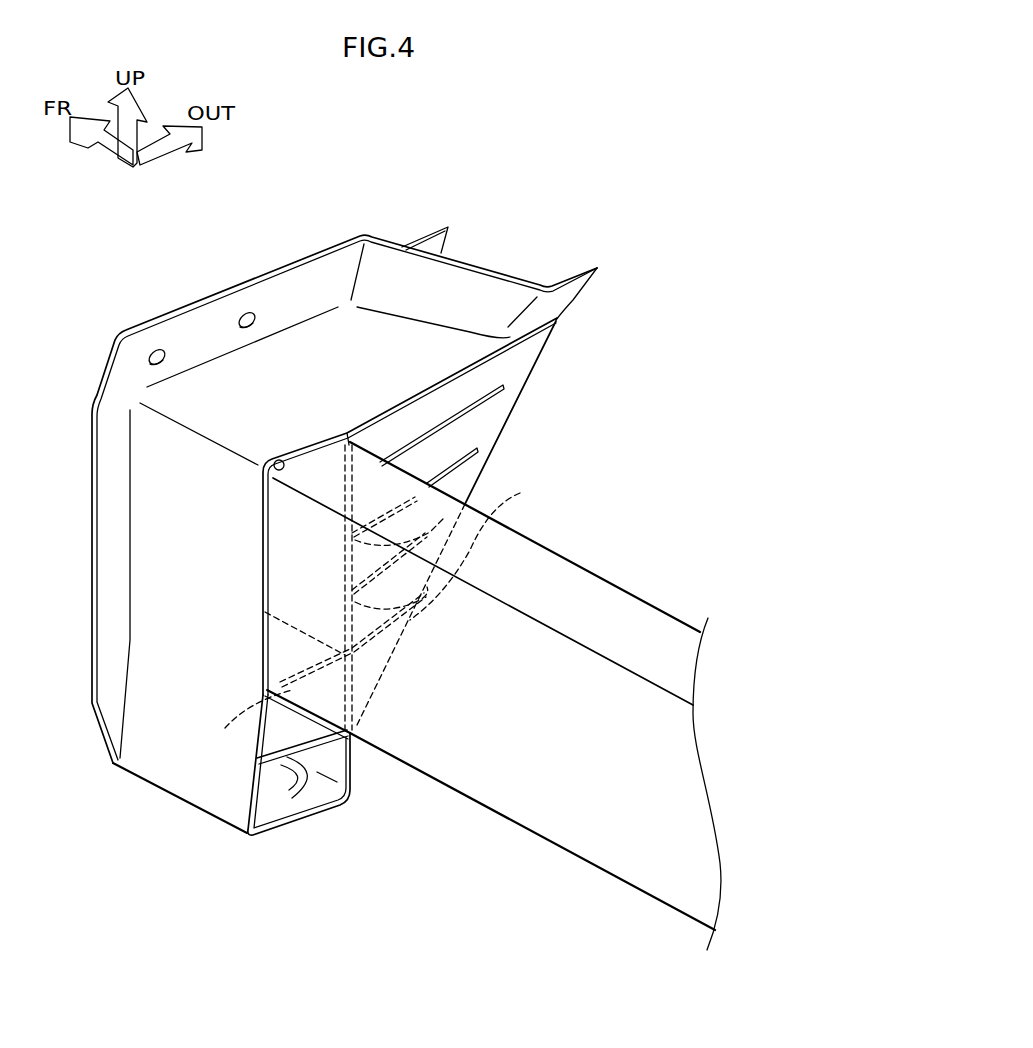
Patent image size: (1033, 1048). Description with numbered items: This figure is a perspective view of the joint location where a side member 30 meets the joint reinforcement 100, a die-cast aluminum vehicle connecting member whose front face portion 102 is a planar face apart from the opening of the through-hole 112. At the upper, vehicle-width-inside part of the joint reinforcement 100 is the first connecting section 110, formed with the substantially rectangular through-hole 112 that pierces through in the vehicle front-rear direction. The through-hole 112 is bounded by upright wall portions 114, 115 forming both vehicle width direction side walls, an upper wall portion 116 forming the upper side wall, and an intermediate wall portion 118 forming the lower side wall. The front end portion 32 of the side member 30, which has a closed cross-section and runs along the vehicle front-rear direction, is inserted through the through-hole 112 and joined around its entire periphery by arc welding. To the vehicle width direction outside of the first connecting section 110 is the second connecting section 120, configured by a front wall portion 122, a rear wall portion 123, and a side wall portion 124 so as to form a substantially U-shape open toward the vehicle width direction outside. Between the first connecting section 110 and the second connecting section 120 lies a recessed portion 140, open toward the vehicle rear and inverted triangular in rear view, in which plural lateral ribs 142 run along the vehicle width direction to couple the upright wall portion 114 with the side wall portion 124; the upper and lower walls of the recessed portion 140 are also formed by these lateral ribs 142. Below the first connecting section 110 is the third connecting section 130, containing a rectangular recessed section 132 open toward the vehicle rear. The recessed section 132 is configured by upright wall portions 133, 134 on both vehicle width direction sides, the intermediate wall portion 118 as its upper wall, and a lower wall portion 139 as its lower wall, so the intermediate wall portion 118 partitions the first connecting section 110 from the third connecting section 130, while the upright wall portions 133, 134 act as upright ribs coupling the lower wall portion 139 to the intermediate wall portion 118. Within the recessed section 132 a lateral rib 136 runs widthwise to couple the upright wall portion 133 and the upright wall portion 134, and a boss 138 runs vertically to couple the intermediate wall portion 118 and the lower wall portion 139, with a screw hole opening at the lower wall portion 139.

The side member 30 is at (615, 581).
The front end portion 32 is at (277, 507).
The joint reinforcement 100 is at (345, 237).
The front face portion 102 is at (217, 293).
The first connecting section 110 is at (311, 441).
The through-hole 112 is at (280, 458).
The upright wall portion 114 is at (338, 513).
The upright wall portion 115 is at (262, 580).
The upper wall portion 116 is at (314, 449).
The intermediate wall portion 118 is at (276, 722).
The second connecting section 120 is at (577, 302).
The front wall portion 122 is at (432, 230).
The rear wall portion 123 is at (574, 273).
The side wall portion 124 is at (480, 268).
The third connecting section 130 is at (235, 800).
The recessed section 132 is at (352, 760).
The upright wall portion 133 is at (245, 822).
The upright wall portion 134 is at (325, 766).
The lateral rib 136 is at (312, 740).
The boss 138 is at (272, 793).
The lower wall portion 139 is at (305, 813).
The recessed portion 140 is at (461, 442).
The lateral ribs 142 is at (440, 392).